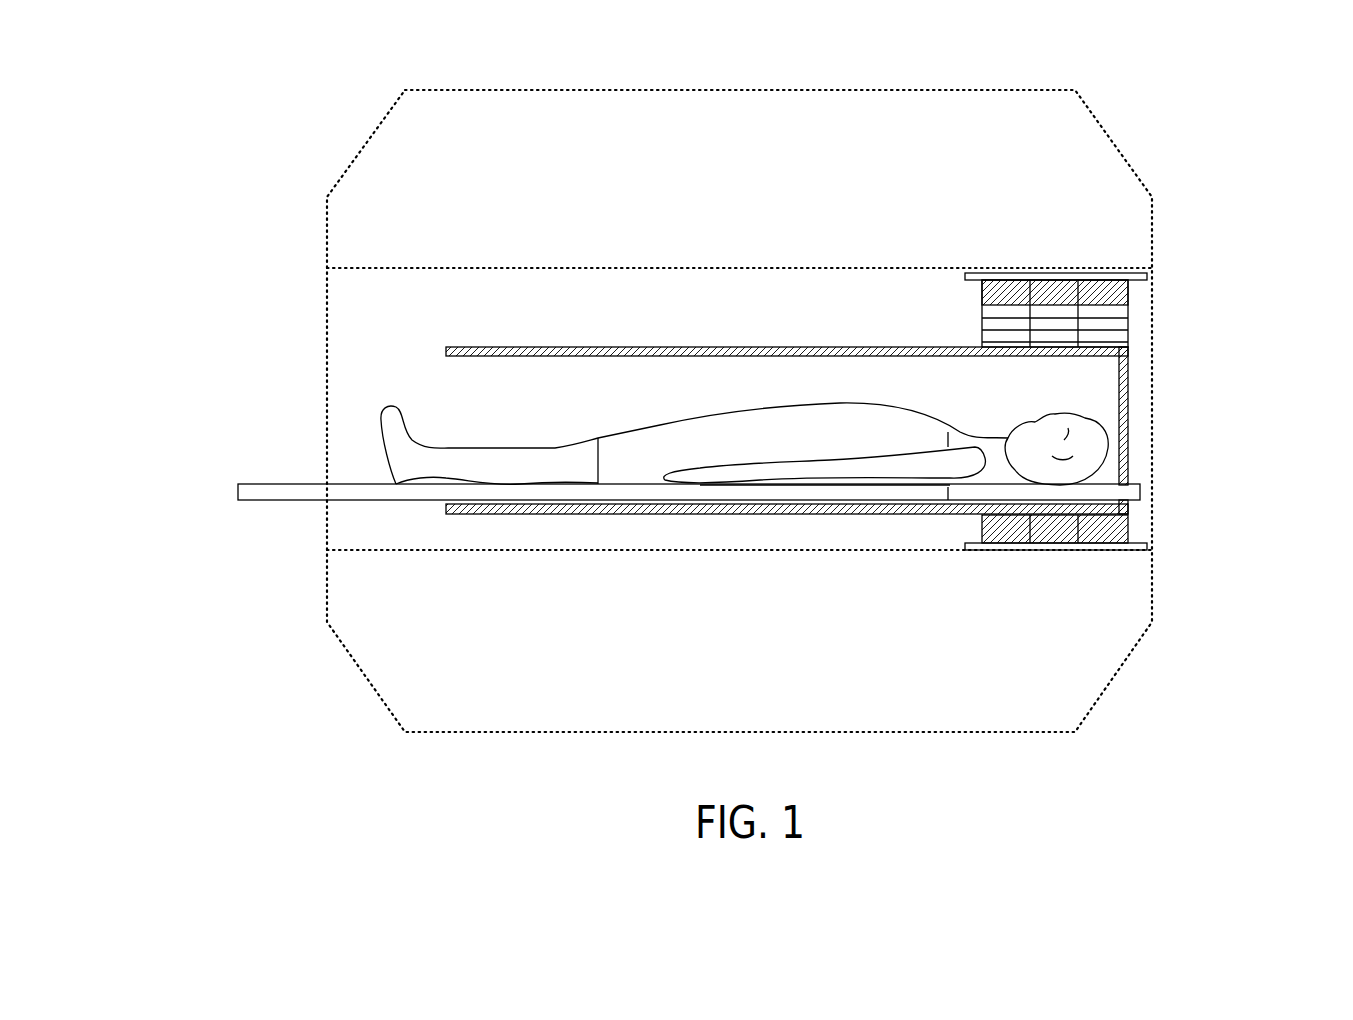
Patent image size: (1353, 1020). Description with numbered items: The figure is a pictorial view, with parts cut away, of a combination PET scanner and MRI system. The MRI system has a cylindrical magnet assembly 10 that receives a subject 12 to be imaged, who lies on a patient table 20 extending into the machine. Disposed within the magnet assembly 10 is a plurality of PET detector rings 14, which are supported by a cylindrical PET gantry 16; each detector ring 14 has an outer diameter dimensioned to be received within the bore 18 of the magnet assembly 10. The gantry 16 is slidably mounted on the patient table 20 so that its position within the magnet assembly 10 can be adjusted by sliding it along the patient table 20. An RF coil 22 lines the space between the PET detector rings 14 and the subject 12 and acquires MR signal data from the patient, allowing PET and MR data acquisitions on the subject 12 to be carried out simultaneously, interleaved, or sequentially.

The cylindrical magnet assembly 10 is at (346, 171).
The subject 12 is at (855, 444).
The PET detector rings 14 is at (1130, 292).
The cylindrical PET gantry 16 is at (966, 273).
The bore 18 is at (318, 404).
The patient table 20 is at (286, 501).
The RF coil 22 is at (480, 347).